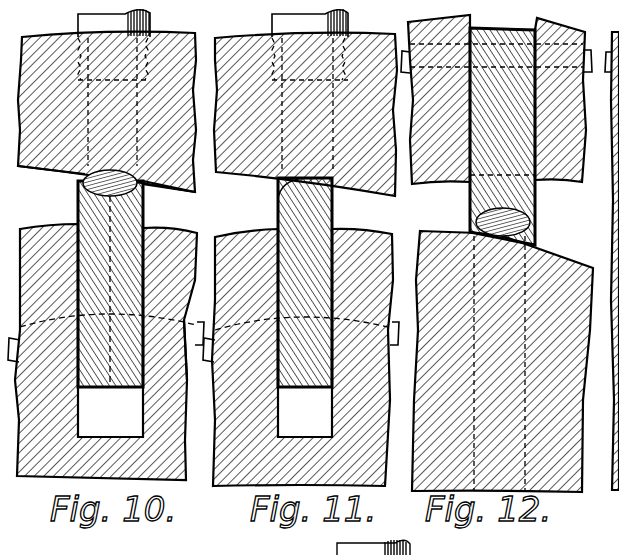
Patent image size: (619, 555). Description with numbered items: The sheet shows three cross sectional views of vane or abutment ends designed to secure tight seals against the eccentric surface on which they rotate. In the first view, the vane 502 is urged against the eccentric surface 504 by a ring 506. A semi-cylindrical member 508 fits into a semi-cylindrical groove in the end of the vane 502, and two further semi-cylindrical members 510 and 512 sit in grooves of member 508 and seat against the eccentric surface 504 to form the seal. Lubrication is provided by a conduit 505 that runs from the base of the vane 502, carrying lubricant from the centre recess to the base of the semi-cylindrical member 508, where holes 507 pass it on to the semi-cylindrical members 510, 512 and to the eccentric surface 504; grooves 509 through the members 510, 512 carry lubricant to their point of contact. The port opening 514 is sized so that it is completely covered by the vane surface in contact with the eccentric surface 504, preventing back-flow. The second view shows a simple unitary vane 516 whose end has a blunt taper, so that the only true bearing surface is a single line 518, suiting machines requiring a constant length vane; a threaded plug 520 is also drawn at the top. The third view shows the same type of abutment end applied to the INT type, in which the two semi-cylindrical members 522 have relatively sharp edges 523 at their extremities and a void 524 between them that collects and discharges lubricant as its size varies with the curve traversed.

In FIG. 10, the vane 502 is at (110, 412).
In FIG. 10, the eccentric surface 504 is at (193, 188).
In FIG. 10, the conduit 505 is at (150, 230).
In FIG. 10, the ring 506 is at (187, 365).
In FIG. 10, the holes 507 is at (78, 206).
In FIG. 10, the semi-cylindrical member 508 is at (78, 192).
In FIG. 10, the grooves 509 is at (118, 171).
In FIG. 10, the semi-cylindrical member 510 is at (80, 179).
In FIG. 10, the semi-cylindrical member 512 is at (144, 200).
In FIG. 10, the port opening 514 is at (150, 22).
In FIG. 11, the vane 516 is at (305, 412).
In FIG. 11, the single line 518 is at (278, 215).
In FIG. 11, the threaded plug 520 is at (348, 22).
In FIG. 12, the semi-cylindrical members 522 is at (472, 224).
In FIG. 12, the sharp edges 523 is at (545, 244).
In FIG. 12, the void 524 is at (536, 226).